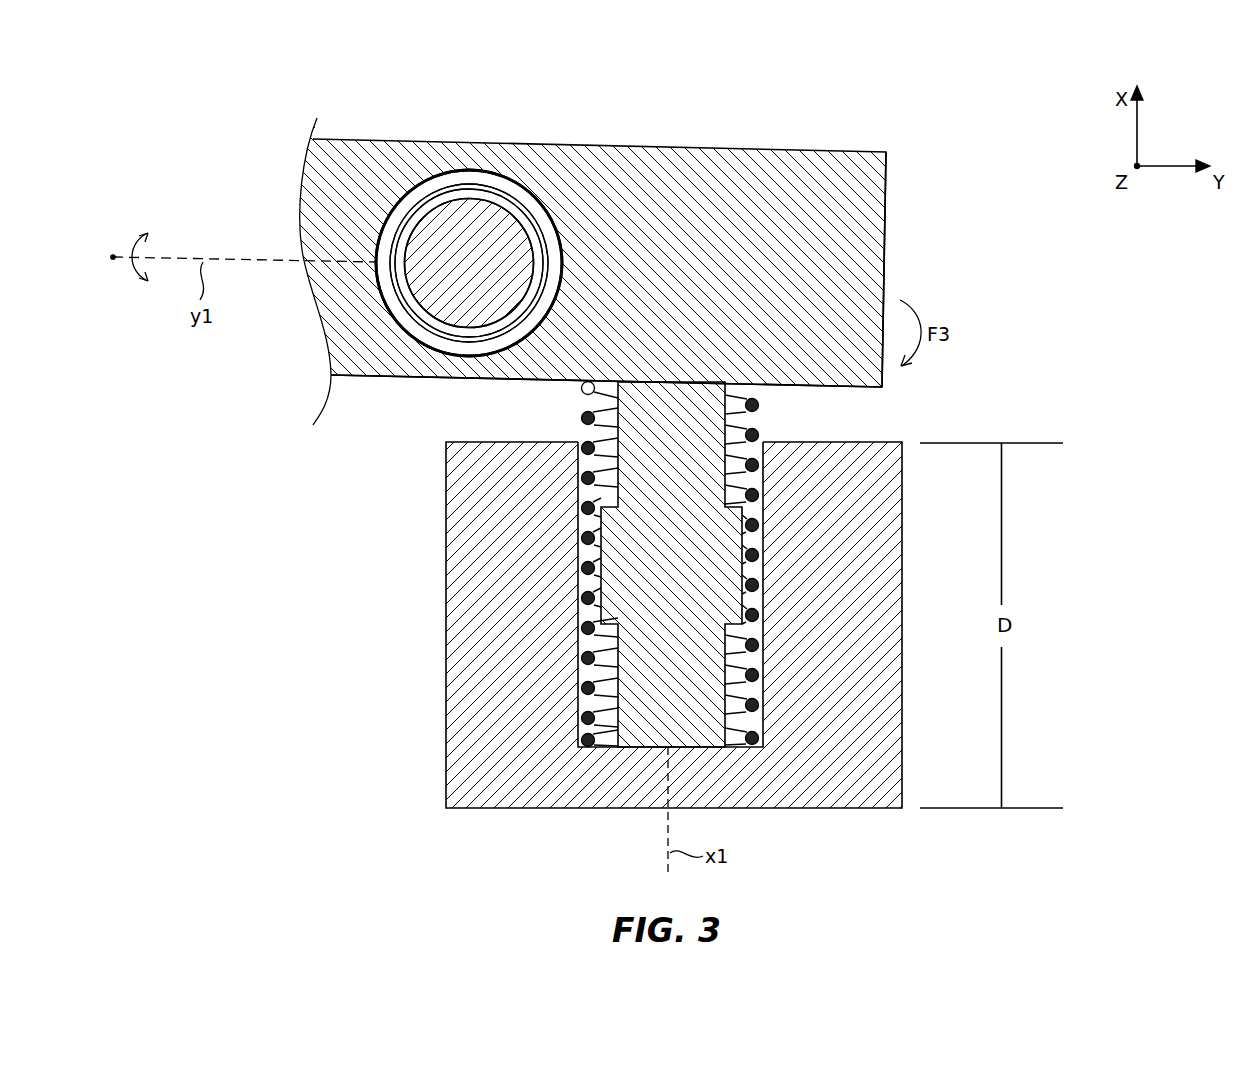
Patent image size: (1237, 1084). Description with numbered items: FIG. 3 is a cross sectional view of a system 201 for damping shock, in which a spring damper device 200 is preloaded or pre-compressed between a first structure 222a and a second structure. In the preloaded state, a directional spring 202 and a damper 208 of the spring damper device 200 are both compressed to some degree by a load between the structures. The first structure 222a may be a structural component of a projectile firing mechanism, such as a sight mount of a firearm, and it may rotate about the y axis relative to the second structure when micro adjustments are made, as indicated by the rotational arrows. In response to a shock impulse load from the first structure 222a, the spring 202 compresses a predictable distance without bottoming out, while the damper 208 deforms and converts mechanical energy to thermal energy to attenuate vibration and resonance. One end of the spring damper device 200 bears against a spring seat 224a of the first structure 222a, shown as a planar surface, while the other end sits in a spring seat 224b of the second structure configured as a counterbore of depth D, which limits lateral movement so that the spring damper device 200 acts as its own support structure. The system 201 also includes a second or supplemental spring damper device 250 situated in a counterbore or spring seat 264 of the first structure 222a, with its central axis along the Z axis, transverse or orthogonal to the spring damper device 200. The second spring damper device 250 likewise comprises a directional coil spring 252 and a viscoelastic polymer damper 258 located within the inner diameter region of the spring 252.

The spring damper device 200 is at (508, 409).
The system 201 is at (858, 115).
The directional spring 202 is at (589, 598).
The damper 208 is at (620, 615).
The first structure 222a is at (857, 256).
The spring seat 224a is at (789, 387).
The spring seat 224b is at (766, 727).
The second spring damper device 250 is at (472, 160).
The directional spring 252 is at (492, 185).
The damper 258 is at (493, 233).
The spring seat 264 is at (404, 195).